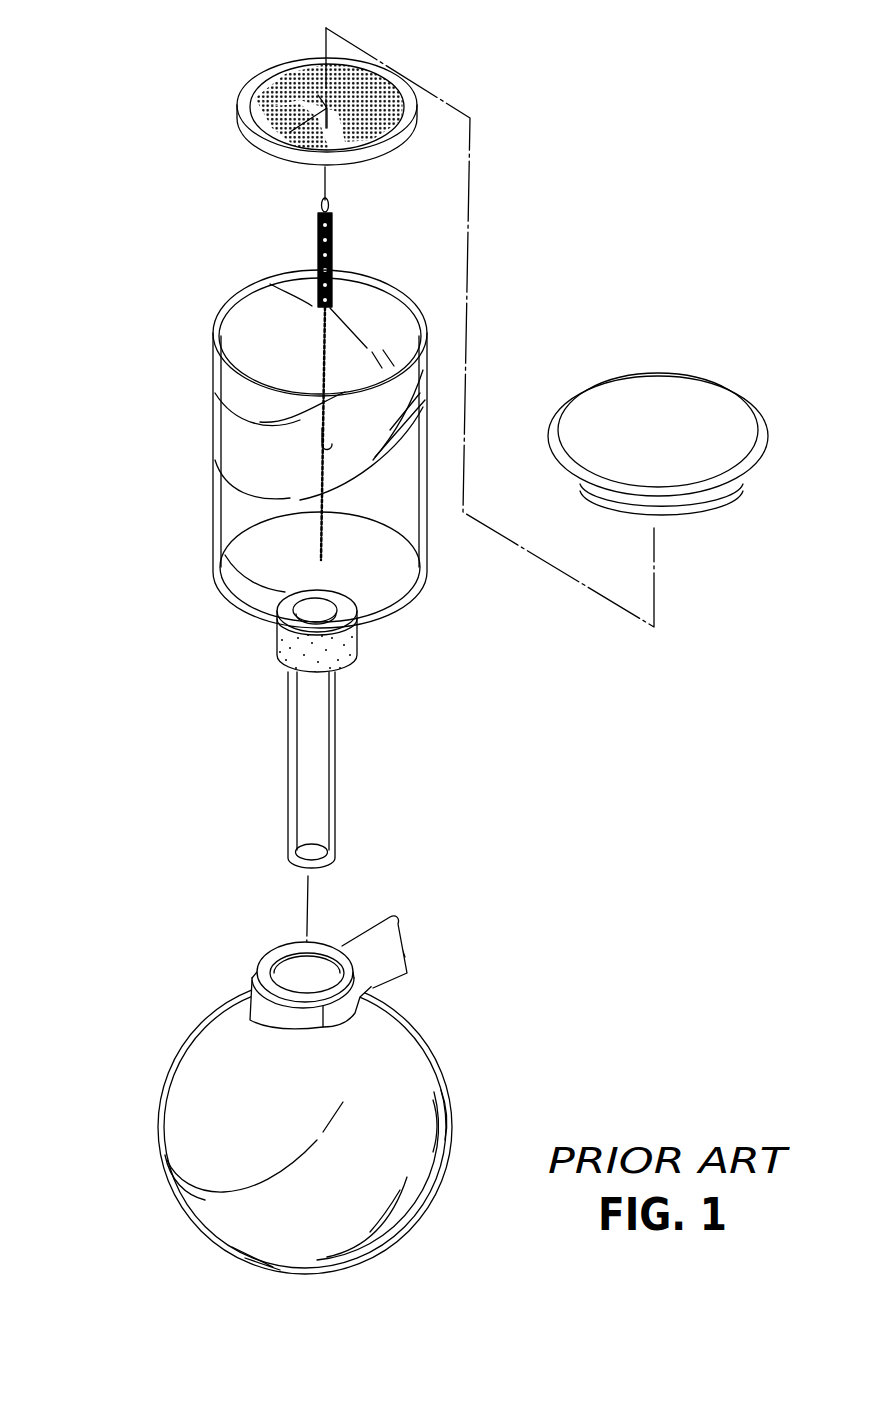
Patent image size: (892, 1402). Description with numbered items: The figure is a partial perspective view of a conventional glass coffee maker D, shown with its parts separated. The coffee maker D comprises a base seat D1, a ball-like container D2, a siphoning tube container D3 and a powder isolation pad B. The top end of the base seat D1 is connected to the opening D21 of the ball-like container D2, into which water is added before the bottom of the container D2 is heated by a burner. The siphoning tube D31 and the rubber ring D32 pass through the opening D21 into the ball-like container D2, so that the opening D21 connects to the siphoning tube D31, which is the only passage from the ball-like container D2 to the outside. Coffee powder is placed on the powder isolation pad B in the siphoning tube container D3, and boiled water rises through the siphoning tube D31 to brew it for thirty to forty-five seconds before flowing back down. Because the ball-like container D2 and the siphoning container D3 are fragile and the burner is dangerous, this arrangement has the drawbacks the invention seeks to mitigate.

The powder isolation pad B is at (237, 105).
The coffee maker D is at (412, 728).
The base seat D1 is at (380, 917).
The ball-like container D2 is at (178, 1058).
The opening D21 is at (288, 968).
The siphoning tube container D3 is at (215, 363).
The siphoning tube D31 is at (293, 733).
The rubber ring D32 is at (278, 645).